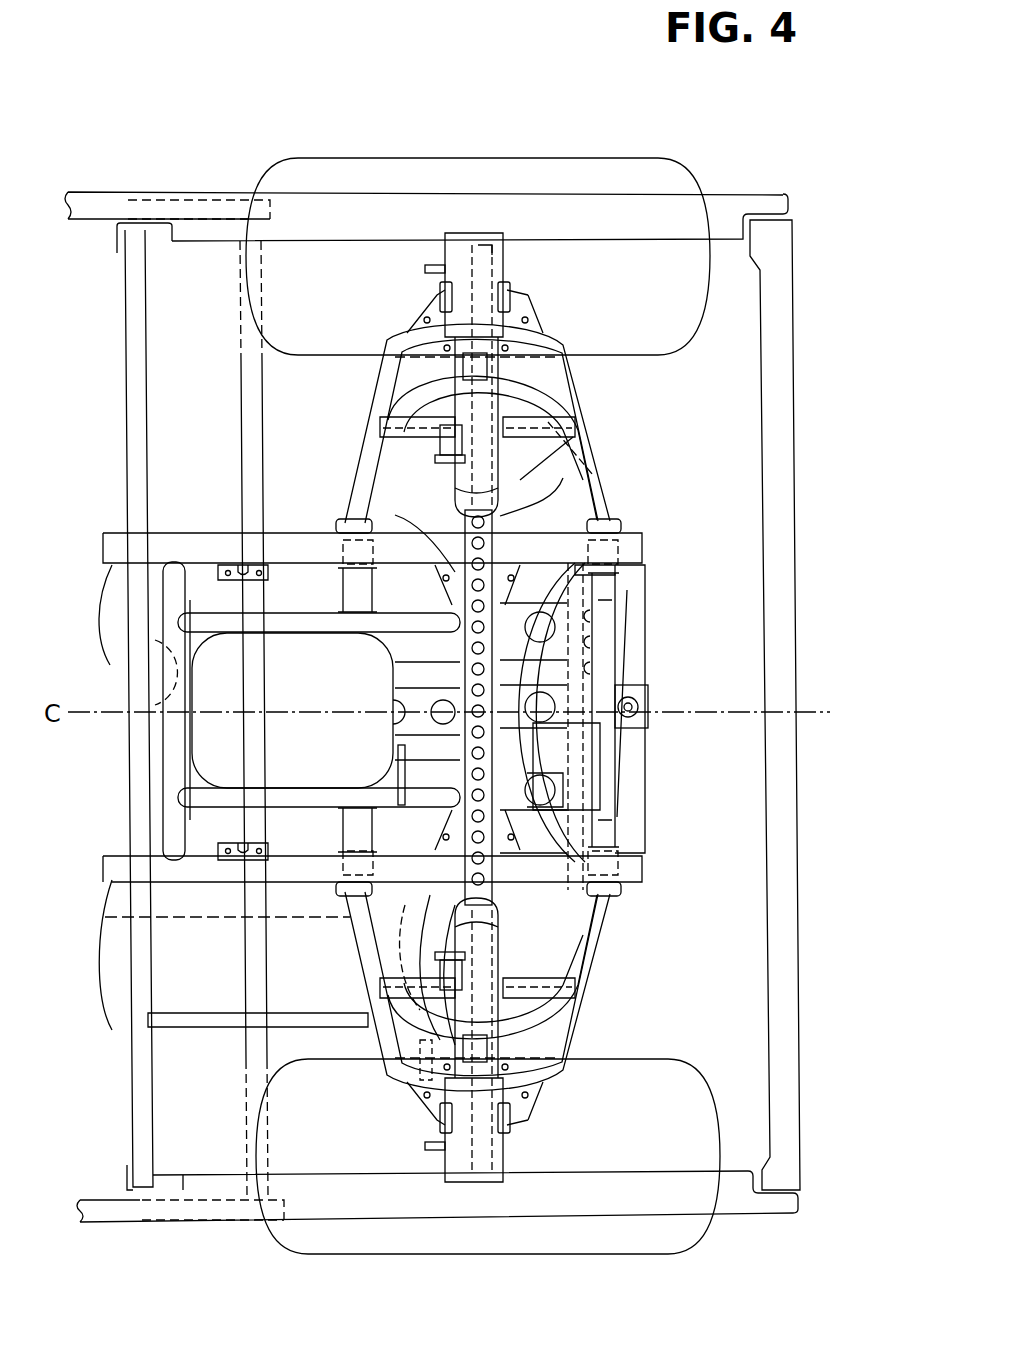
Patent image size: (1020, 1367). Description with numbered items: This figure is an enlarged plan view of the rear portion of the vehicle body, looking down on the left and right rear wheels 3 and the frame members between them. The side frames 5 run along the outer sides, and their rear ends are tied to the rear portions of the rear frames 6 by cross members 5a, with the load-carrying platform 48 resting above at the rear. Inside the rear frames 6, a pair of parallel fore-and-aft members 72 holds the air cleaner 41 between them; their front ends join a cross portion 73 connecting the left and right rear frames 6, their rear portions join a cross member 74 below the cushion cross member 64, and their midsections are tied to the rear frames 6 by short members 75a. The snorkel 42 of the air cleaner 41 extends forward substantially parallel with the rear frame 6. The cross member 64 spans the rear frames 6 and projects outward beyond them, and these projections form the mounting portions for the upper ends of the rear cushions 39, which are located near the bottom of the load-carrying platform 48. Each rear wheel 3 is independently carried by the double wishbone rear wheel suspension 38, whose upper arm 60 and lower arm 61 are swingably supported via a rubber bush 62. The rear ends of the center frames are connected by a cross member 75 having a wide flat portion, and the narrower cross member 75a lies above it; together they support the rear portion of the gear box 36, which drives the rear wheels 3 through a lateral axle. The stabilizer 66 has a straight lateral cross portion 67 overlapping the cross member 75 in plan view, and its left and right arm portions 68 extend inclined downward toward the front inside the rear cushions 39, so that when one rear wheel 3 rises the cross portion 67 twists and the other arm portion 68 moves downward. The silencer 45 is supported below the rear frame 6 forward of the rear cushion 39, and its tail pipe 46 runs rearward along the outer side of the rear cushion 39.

The rear wheels 3 is at (487, 160).
The side frames 5 is at (100, 205).
The cross members 5a is at (243, 388).
The rear frames 6 is at (645, 540).
The gear box 36 is at (600, 758).
The rear wheel suspension 38 is at (614, 418).
The rear cushion 39 is at (452, 484).
The air cleaner 41 is at (296, 752).
The snorkel 42 is at (100, 636).
The silencer 45 is at (100, 980).
The tail pipe 46 is at (585, 1010).
The load-carrying platform 48 is at (748, 182).
The upper arm 60 is at (590, 452).
The lower arm 61 is at (598, 386).
The rubber bush 62 is at (340, 520).
The cross member 64 is at (500, 530).
The stabilizer 66 is at (585, 482).
The cross portion 67 is at (620, 575).
The arm portion 68 is at (560, 436).
The fore-and-aft members 72 is at (175, 562).
The cross portion 73 is at (180, 618).
The cross member 74 is at (395, 518).
The cross member 75 is at (648, 640).
The short members / narrower cross member 75a is at (343, 592).